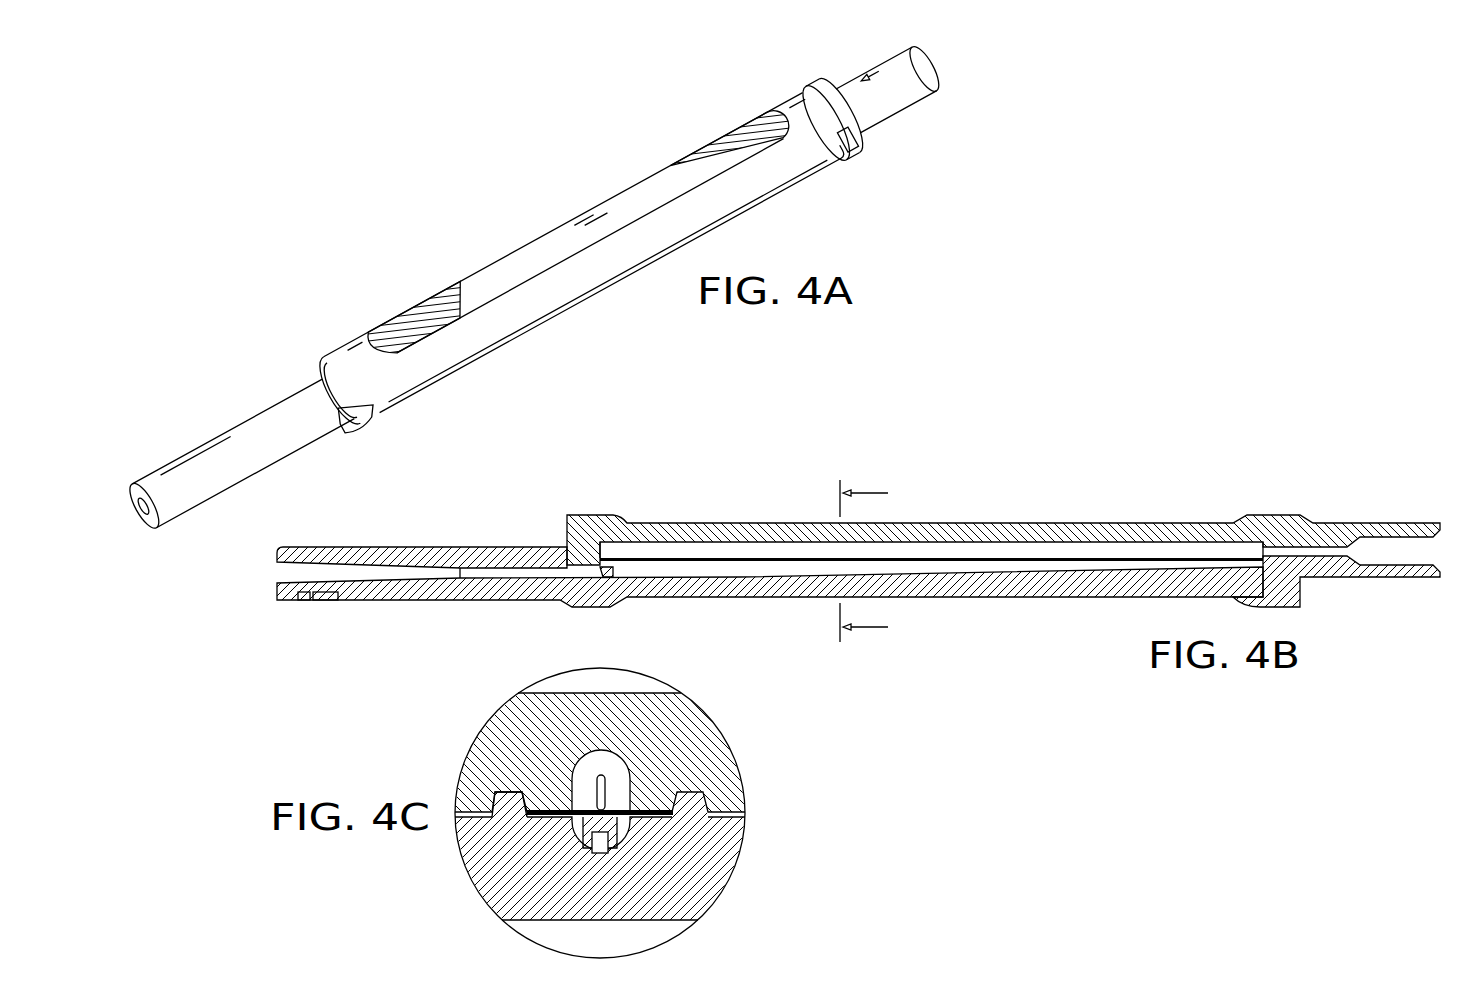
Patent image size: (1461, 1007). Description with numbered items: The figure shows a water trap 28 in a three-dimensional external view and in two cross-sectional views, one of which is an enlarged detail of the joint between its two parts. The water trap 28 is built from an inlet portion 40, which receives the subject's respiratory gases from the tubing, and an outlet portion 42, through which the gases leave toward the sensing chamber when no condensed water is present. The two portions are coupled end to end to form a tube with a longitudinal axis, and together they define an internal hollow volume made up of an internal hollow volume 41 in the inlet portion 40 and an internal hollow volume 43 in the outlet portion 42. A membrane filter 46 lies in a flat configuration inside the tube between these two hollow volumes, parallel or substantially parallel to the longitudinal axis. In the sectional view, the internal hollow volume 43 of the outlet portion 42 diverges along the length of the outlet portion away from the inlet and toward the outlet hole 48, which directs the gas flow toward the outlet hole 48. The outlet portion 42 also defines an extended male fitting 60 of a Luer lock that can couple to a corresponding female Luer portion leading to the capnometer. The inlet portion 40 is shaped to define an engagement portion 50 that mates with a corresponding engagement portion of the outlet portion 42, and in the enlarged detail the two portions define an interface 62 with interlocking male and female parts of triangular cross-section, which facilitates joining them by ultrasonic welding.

In FIG. 4A, the water trap 28 is at (470, 240).
In FIG. 4B, the water trap 28 is at (831, 550).
In FIG. 4B, the inlet portion 40 is at (667, 535).
In FIG. 4C, the inlet portion 40 is at (690, 718).
In FIG. 4B, the internal hollow volume 41 is at (1072, 553).
In FIG. 4C, the internal hollow volume 41 is at (615, 793).
In FIG. 4B, the outlet portion 42 is at (1110, 584).
In FIG. 4C, the outlet portion 42 is at (673, 913).
In FIG. 4B, the internal hollow volume 43 is at (740, 568).
In FIG. 4C, the internal hollow volume 43 is at (600, 857).
In FIG. 4B, the membrane filter 46 is at (1037, 563).
In FIG. 4C, the membrane filter 46 is at (650, 813).
In FIG. 4B, the outlet hole 48 is at (270, 578).
In FIG. 4C, the engagement portion 50 is at (627, 820).
In FIG. 4A, the extended male fitting 60 is at (234, 440).
In FIG. 4B, the extended male fitting 60 is at (405, 576).
In FIG. 4C, the interface 62 is at (500, 788).